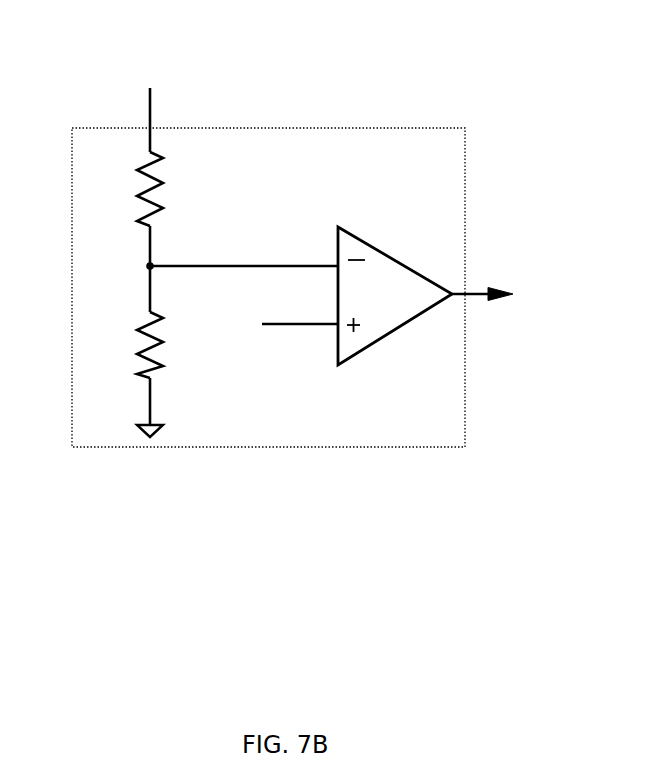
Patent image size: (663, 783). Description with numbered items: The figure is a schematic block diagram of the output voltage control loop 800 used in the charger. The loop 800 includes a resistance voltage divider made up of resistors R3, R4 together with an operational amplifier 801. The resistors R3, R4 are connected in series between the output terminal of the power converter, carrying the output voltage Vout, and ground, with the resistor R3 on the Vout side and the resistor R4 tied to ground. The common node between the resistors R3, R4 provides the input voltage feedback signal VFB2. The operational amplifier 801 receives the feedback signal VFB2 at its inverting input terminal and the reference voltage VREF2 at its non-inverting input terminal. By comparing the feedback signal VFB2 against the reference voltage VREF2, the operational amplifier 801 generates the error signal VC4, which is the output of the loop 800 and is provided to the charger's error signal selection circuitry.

The output voltage control loop 800 is at (297, 253).
The operational amplifier 801 is at (352, 231).
The resistor R3 is at (134, 189).
The resistor R4 is at (134, 345).
The output voltage Vout is at (101, 105).
The input voltage feedback signal VFB2 is at (244, 244).
The reference voltage VREF2 is at (276, 349).
The error signal VC4 is at (497, 273).